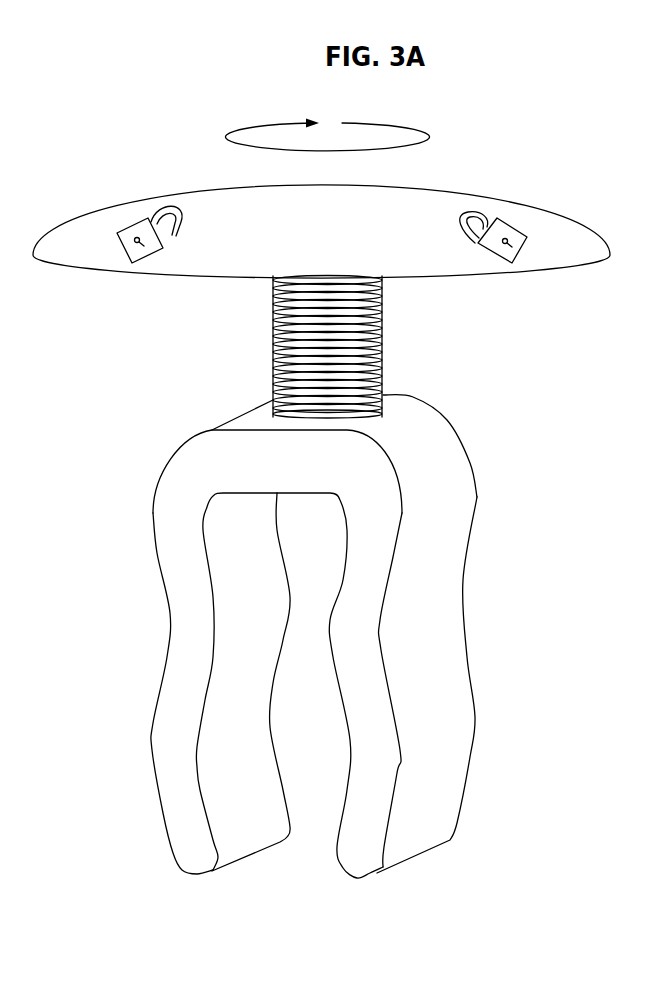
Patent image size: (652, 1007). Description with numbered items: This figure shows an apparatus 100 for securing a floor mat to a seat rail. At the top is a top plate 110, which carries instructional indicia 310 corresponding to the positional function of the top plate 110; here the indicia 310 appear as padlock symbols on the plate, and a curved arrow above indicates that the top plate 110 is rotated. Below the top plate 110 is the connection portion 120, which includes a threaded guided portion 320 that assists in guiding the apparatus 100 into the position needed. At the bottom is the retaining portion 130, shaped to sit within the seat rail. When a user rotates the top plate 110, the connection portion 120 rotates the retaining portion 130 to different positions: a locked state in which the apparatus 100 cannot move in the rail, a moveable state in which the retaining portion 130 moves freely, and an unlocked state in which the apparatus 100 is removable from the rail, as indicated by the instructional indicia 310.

The apparatus 100 is at (322, 543).
The top plate 110 is at (317, 218).
The connection portion 120 is at (459, 377).
The retaining portion 130 is at (539, 682).
The instructional indicia 310 is at (131, 219).
The guided portion 320 is at (260, 330).